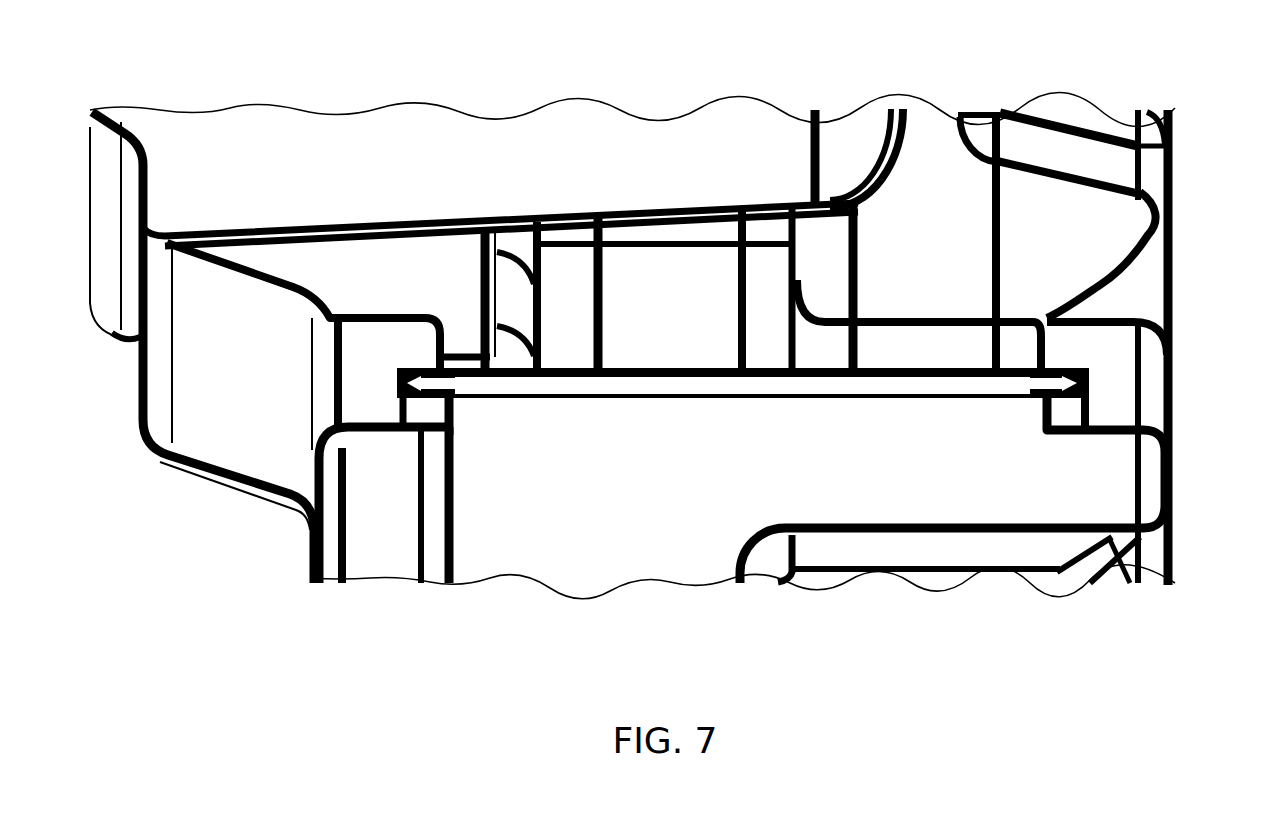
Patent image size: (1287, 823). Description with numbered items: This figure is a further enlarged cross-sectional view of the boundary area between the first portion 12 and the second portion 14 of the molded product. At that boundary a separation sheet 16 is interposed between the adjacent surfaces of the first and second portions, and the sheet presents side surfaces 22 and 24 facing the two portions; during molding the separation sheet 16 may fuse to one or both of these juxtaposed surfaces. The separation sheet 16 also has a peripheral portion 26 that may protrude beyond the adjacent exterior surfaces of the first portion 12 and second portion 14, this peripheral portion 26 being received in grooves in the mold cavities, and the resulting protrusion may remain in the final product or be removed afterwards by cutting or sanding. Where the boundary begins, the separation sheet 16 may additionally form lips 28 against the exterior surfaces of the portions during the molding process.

The first portion 12 is at (383, 545).
The second portion 14 is at (210, 285).
The separation sheet 16 is at (760, 385).
The side surface 22 is at (640, 473).
The side surface 24 is at (641, 365).
The peripheral portion 26 is at (417, 382).
The lip 28 is at (400, 408).